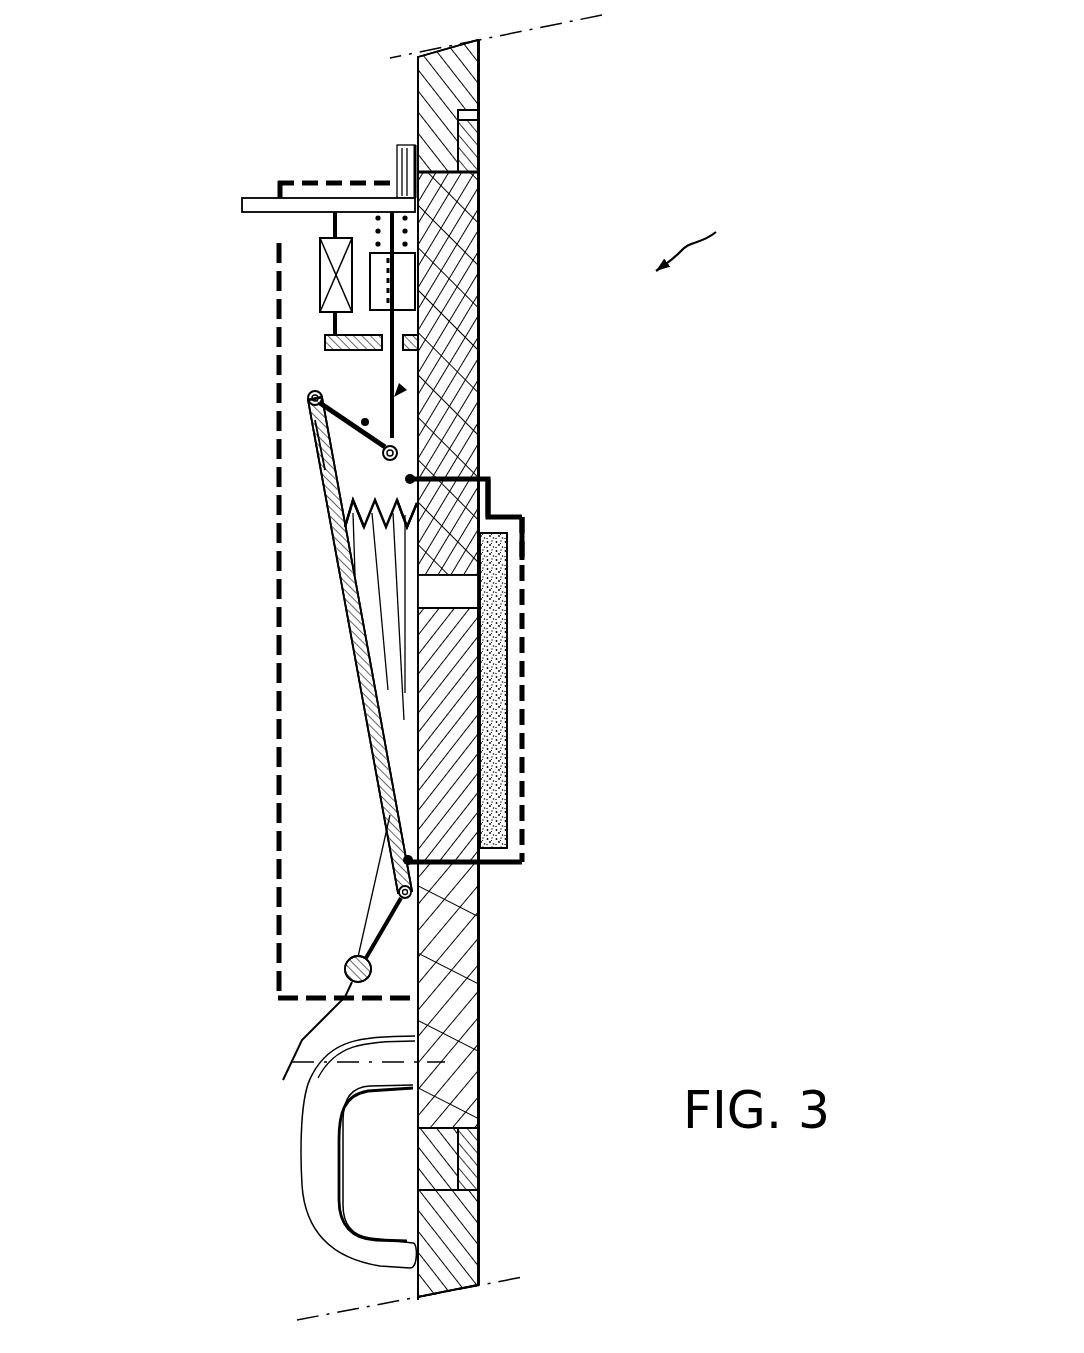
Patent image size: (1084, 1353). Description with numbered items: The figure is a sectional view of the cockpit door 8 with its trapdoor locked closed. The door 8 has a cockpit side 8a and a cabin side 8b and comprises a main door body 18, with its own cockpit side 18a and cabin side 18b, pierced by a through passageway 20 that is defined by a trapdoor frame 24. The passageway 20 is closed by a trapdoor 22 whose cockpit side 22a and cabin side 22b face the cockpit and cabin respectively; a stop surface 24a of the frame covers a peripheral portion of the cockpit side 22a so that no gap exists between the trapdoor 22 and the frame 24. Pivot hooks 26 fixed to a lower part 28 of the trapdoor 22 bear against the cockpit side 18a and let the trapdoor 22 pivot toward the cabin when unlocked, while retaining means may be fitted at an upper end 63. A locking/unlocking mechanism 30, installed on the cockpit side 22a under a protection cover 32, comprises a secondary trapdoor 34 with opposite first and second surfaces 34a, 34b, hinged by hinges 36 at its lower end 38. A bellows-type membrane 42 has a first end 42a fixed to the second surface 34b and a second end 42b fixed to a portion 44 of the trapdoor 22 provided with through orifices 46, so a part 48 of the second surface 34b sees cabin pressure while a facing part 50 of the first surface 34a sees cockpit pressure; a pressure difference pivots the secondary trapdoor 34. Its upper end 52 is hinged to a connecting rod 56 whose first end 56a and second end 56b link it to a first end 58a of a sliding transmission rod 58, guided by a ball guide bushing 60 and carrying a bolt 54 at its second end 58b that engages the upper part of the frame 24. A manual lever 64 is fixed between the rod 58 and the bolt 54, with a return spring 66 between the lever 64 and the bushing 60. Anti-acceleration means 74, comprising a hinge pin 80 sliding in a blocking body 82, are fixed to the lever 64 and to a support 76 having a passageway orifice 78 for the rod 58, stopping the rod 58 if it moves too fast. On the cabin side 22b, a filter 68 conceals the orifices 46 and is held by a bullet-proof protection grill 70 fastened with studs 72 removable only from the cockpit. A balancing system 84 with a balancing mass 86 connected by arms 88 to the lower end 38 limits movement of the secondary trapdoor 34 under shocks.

The door 8 is at (691, 239).
The cockpit side of the door 8a is at (415, 90).
The cabin side of the door 8b is at (481, 88).
The main door body 18 is at (509, 670).
The cockpit side of the main door body 18a is at (395, 66).
The cabin side of the main door body 18b is at (539, 75).
The through passageway 20 is at (509, 373).
The trapdoor 22 is at (509, 1026).
The cockpit side of the trapdoor 22a is at (539, 1085).
The cabin side of the trapdoor 22b is at (524, 1150).
The trapdoor frame 24 is at (529, 146).
The stop surface 24a is at (509, 195).
The pivot hooks 26 is at (335, 1154).
The lower part of the trapdoor 28 is at (509, 1171).
The locking/unlocking mechanism 30 is at (362, 807).
The protection cover 32 is at (309, 1052).
The secondary trapdoor 34 is at (306, 645).
The first surface of the secondary trapdoor 34a is at (263, 462).
The second surface of the secondary trapdoor 34b is at (260, 423).
The hinges 36 is at (480, 997).
The lower end of the secondary trapdoor 38 is at (363, 918).
The membrane 42 is at (382, 522).
The first end of the membrane 42a is at (276, 529).
The second end of the membrane 42b is at (302, 595).
The portion of the trapdoor 44 is at (509, 735).
The through orifices 46 is at (540, 690).
The part of the second surface 48 is at (302, 645).
The part of the first surface 50 is at (303, 674).
The upper end of the secondary trapdoor 52 is at (253, 620).
The bolt 54 is at (364, 119).
The connecting rod 56 is at (358, 410).
The first end of the connecting rod 56a is at (259, 360).
The second end of the connecting rod 56b is at (540, 593).
The sliding transmission rod 58 is at (503, 475).
The first end of the transmission rod 58a is at (542, 520).
The second end of the transmission rod 58b is at (539, 342).
The guide bushing 60 is at (539, 410).
The upper end of the trapdoor 63 is at (539, 289).
The lever 64 is at (297, 147).
The return spring 66 is at (328, 149).
The filter 68 is at (540, 858).
The bullet-proof protection grill 70 is at (502, 691).
The studs 72 is at (509, 748).
The anti-acceleration means 74 is at (317, 258).
The support 76 is at (458, 325).
The passageway orifice 78 is at (309, 305).
The hinge pin 80 is at (353, 218).
The blocking body 82 is at (276, 271).
The balancing system 84 is at (306, 941).
The balancing mass 86 is at (303, 1045).
The arms 88 is at (286, 1003).